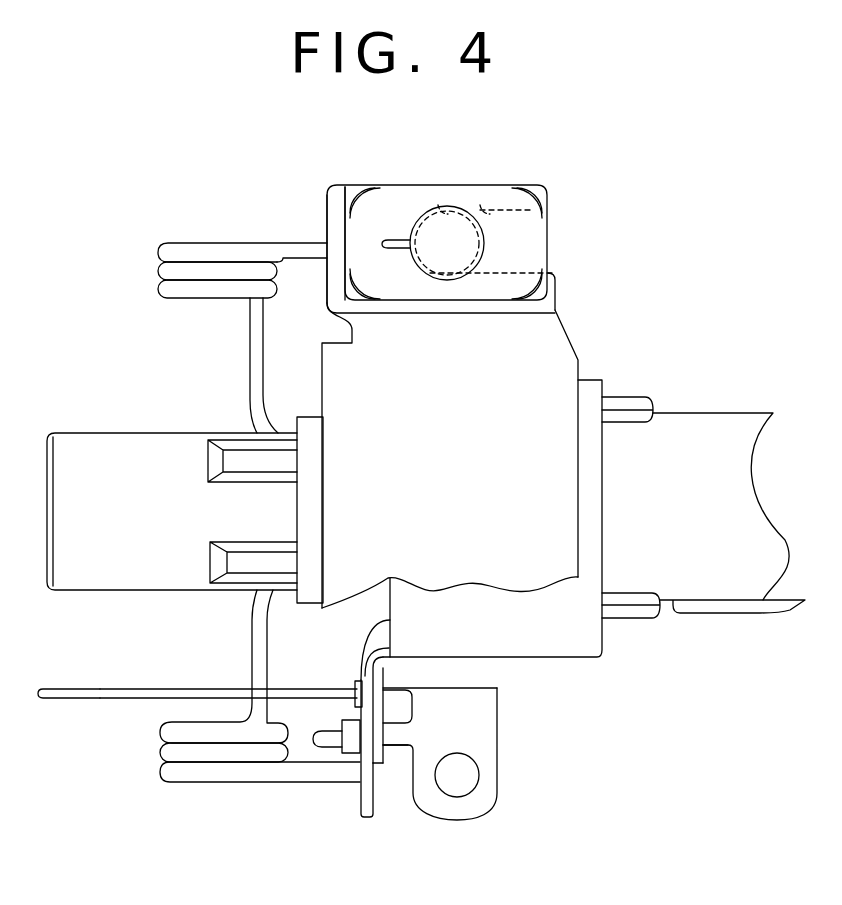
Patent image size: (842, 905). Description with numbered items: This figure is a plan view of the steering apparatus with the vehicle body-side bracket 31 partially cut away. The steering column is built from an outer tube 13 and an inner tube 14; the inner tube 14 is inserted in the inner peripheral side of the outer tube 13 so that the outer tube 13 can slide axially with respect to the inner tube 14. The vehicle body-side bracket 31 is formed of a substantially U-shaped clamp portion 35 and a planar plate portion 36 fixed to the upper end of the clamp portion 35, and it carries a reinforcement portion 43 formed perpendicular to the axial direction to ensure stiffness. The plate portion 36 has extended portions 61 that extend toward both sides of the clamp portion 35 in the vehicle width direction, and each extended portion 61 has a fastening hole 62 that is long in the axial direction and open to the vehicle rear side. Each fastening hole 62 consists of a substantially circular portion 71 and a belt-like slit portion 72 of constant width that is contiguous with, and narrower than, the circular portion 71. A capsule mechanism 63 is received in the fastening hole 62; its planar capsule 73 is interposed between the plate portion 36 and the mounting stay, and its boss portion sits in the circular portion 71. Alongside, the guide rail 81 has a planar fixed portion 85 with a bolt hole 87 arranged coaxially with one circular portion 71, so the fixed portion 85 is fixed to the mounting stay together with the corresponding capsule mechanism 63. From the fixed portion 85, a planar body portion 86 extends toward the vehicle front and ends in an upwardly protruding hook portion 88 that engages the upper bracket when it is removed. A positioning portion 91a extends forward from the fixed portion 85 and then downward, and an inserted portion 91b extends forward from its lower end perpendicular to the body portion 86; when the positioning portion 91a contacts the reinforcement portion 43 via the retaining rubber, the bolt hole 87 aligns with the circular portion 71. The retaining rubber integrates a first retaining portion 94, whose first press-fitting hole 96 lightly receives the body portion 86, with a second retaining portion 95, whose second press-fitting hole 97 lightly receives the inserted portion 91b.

The outer tube 13 is at (703, 428).
The inner tube 14 is at (99, 455).
The vehicle body-side bracket 31 is at (533, 483).
The clamp portion 35 is at (588, 398).
The plate portion 36 is at (562, 352).
The reinforcement portion 43 is at (360, 806).
The extended portion 61 is at (327, 205).
The fastening hole 62 is at (468, 159).
The capsule mechanism 63 is at (445, 204).
The circular portion 71 is at (445, 206).
The slit portion 72 is at (488, 206).
The capsule 73 is at (548, 230).
The guide rail 81 is at (487, 738).
The fixed portion 85 is at (492, 741).
The body portion 86 is at (197, 674).
The bolt hole 87 is at (475, 788).
The hook portion 88 is at (48, 689).
The positioning portion 91a is at (385, 738).
The inserted portion 91b is at (323, 739).
The first retaining portion 94 is at (412, 708).
The second retaining portion 95 is at (385, 716).
The first press-fitting hole 96 is at (364, 676).
The second press-fitting hole 97 is at (381, 762).